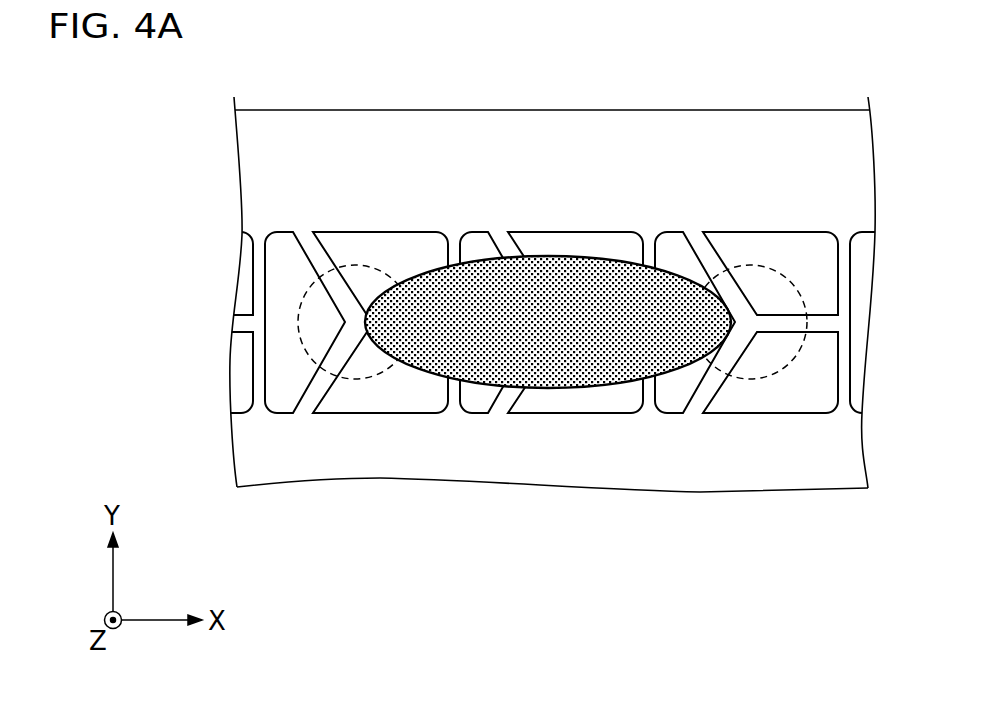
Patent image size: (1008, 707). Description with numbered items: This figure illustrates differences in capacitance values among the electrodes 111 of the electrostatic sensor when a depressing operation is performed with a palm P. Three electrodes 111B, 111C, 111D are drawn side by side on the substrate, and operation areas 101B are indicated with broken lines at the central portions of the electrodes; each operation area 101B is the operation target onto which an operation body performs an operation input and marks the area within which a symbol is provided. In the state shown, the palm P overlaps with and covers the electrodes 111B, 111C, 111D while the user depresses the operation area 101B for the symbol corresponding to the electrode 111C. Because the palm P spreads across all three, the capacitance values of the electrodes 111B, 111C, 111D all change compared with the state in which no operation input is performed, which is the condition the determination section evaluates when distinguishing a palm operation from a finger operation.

The electrodes 111 is at (524, 217).
The electrode 111B is at (745, 232).
The electrode 111C is at (548, 232).
The electrode 111D is at (355, 232).
The operation area 101B is at (752, 379).
The palm P is at (452, 386).